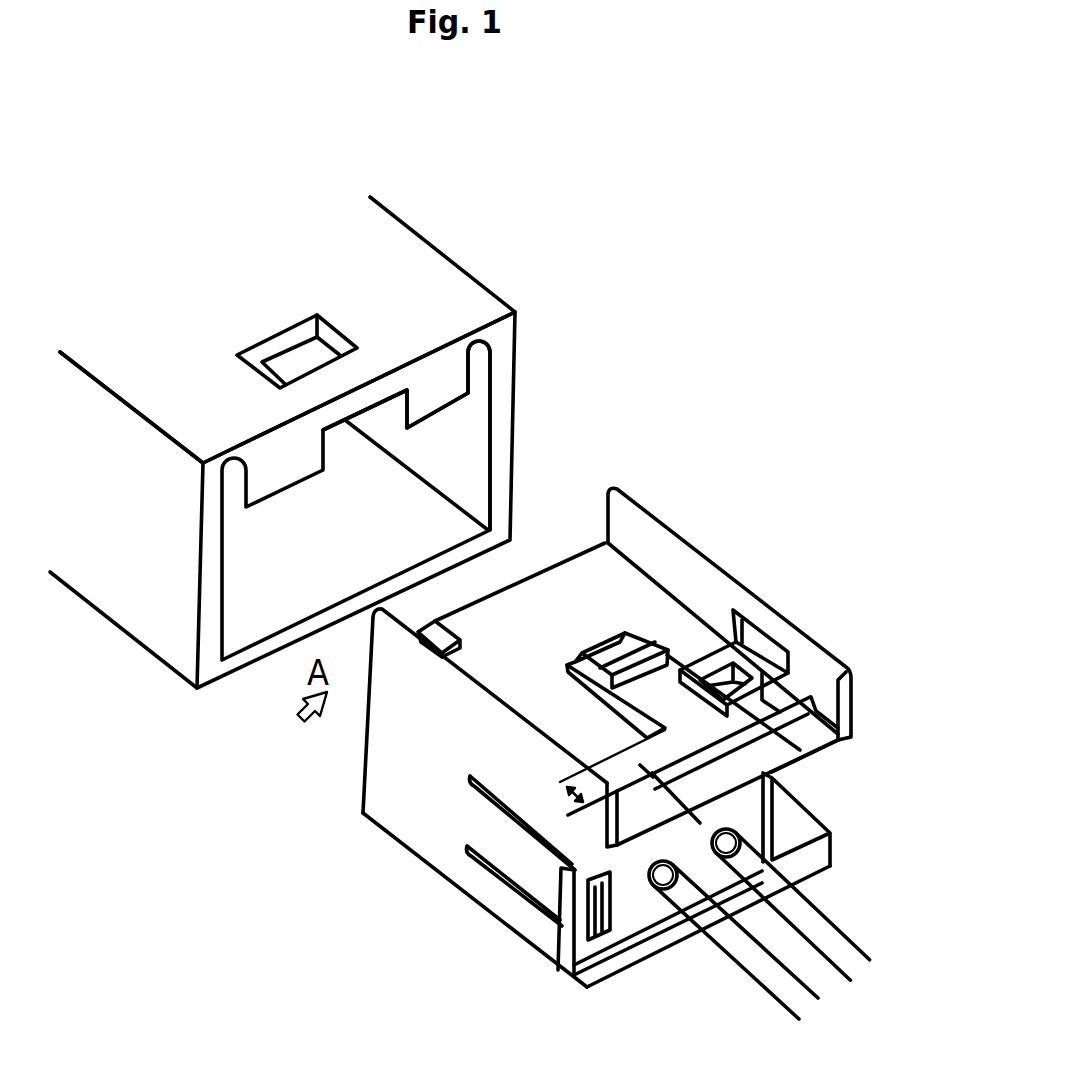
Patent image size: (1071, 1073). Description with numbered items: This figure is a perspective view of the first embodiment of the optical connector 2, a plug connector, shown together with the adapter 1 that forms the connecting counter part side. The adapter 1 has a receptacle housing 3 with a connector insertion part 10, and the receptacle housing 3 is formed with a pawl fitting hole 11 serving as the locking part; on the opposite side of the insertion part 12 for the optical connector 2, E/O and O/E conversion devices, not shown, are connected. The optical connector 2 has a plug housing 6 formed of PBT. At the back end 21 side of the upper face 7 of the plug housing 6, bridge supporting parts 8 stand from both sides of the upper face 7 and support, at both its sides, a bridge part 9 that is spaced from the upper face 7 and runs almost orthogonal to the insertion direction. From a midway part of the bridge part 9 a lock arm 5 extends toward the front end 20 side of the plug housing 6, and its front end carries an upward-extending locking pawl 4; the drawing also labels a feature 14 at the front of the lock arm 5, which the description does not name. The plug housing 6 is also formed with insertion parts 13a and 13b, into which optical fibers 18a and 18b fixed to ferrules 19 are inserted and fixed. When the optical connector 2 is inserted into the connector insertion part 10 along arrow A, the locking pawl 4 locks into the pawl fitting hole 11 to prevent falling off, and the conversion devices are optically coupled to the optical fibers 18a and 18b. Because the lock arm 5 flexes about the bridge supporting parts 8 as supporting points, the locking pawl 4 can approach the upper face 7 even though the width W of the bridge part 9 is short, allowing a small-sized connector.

The adapter 1 is at (118, 660).
The optical connector 2 is at (633, 749).
The receptacle housing 3 is at (326, 432).
The locking pawl 4 is at (667, 654).
The lock arm 5 is at (670, 690).
The plug housing 6 is at (420, 825).
The upper face 7 is at (652, 607).
The bridge supporting parts 8 is at (812, 718).
The bridge part 9 is at (762, 700).
The connector insertion part 10 is at (443, 427).
The pawl fitting hole 11 is at (320, 350).
The insertion part 12 is at (490, 460).
The insertion part for optical fiber 13a is at (650, 903).
The insertion part for optical fiber 13b is at (748, 826).
The lock projection 14 is at (605, 653).
The optical fiber 18a is at (743, 952).
The optical fiber 18b is at (822, 925).
The ferrules 19 is at (742, 838).
The front end 20 is at (497, 583).
The back end 21 is at (798, 753).